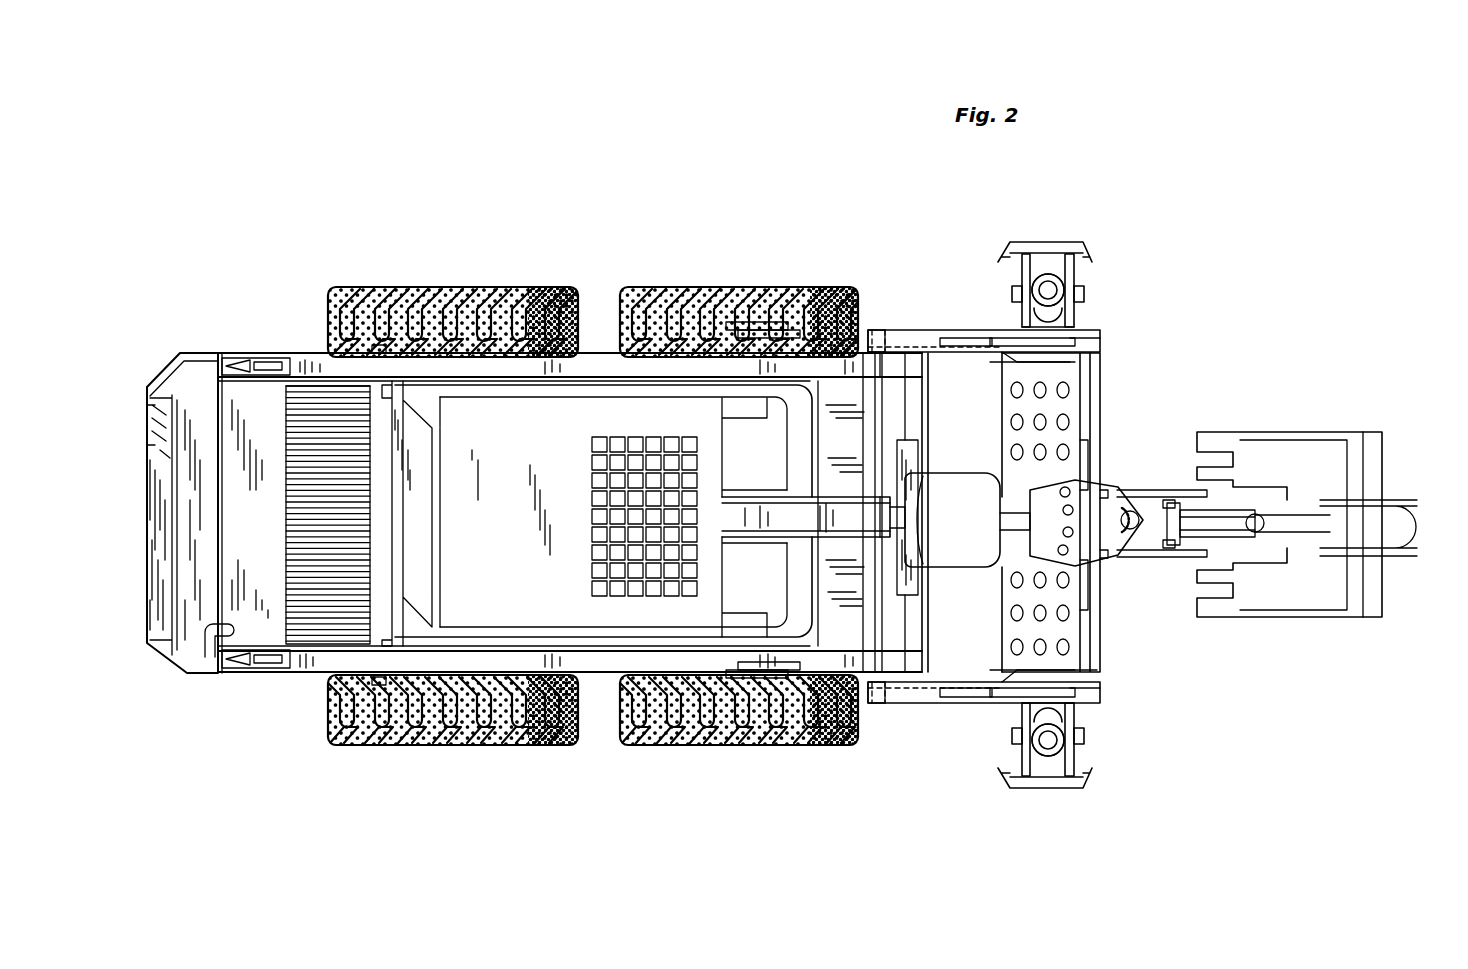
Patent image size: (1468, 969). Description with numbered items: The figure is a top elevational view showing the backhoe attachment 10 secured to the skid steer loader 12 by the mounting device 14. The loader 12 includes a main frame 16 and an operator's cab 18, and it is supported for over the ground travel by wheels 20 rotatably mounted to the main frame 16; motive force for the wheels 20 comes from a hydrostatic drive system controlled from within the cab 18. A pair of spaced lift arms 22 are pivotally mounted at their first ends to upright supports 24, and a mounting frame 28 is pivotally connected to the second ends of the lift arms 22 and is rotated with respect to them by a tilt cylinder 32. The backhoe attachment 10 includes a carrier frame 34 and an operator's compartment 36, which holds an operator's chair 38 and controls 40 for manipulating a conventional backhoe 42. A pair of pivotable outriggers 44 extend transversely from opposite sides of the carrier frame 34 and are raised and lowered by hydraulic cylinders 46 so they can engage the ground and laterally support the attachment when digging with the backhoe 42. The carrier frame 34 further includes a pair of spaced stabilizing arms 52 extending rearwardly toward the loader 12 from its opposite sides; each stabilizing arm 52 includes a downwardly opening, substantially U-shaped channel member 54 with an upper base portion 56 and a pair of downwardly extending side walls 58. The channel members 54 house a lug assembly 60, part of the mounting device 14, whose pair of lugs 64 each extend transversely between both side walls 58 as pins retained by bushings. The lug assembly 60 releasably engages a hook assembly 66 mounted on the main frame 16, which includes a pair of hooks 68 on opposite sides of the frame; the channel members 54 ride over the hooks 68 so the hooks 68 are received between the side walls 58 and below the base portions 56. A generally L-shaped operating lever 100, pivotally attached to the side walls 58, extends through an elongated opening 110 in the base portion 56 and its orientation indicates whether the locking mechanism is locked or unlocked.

The backhoe attachment 10 is at (1236, 430).
The skid steer loader 12 is at (470, 272).
The mounting device 14 is at (930, 357).
The main frame 16 is at (190, 360).
The operator's cab 18 is at (595, 412).
The wheels 20 is at (342, 290).
The lift arms 22 is at (528, 372).
The upright supports 24 is at (248, 358).
The mounting frame 28 is at (915, 460).
The tilt cylinder 32 is at (898, 513).
The carrier frame 34 is at (958, 703).
The operator's compartment 36 is at (1052, 402).
The operator's chair 38 is at (950, 541).
The controls 40 is at (1093, 516).
The backhoe 42 is at (1268, 497).
The pivotable outriggers 44 is at (1085, 262).
The hydraulic cylinders 46 is at (1060, 300).
The stabilizing arms 52 is at (925, 330).
The U-shaped channel member 54 is at (1010, 330).
The upper base portion 56 is at (945, 330).
The side walls 58 is at (873, 330).
The lug assembly 60 is at (890, 330).
The lugs 64 is at (860, 402).
The hook assembly 66 is at (750, 322).
The hooks 68 is at (790, 330).
The operating lever 100 is at (1060, 350).
The elongated opening 110 is at (965, 340).